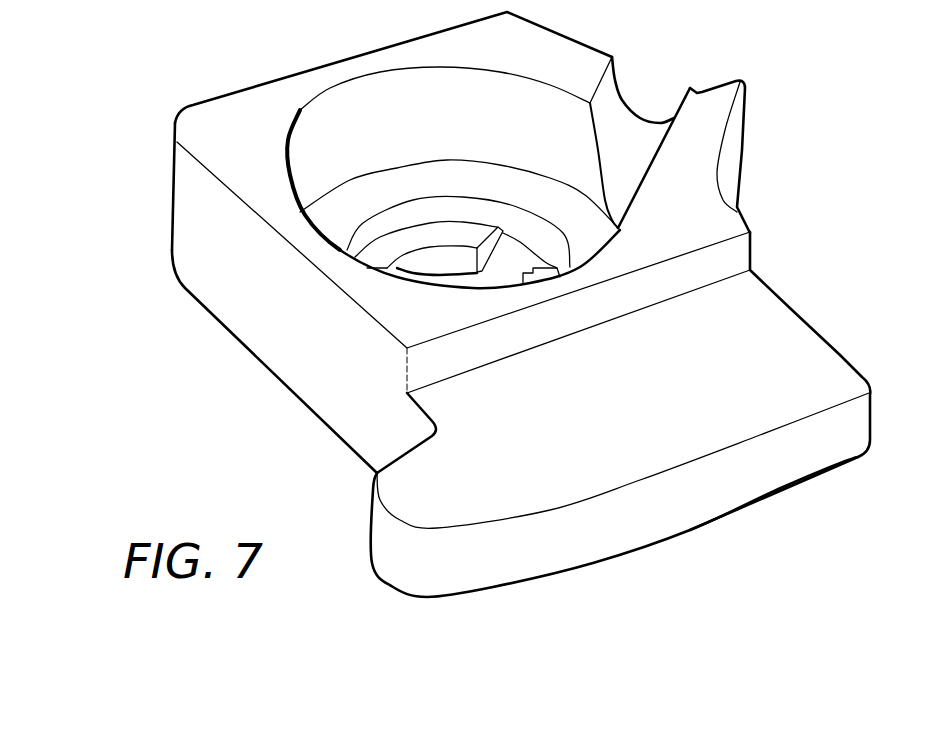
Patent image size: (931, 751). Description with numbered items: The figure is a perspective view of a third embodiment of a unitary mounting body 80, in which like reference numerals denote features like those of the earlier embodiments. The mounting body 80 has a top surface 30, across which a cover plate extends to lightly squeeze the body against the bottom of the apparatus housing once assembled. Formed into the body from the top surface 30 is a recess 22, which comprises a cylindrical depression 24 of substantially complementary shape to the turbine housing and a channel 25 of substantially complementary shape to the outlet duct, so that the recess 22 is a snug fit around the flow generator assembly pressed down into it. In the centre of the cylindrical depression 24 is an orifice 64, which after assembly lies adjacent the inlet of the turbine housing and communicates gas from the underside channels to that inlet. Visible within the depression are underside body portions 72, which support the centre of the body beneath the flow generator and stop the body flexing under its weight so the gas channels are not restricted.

The recess 22 is at (322, 142).
The cylindrical depression 24 is at (368, 100).
The channel 25 is at (607, 112).
The top surface 30 is at (700, 227).
The orifice 64 is at (428, 268).
The underside body portions 72 is at (537, 277).
The unitary mounting body 80 is at (180, 373).